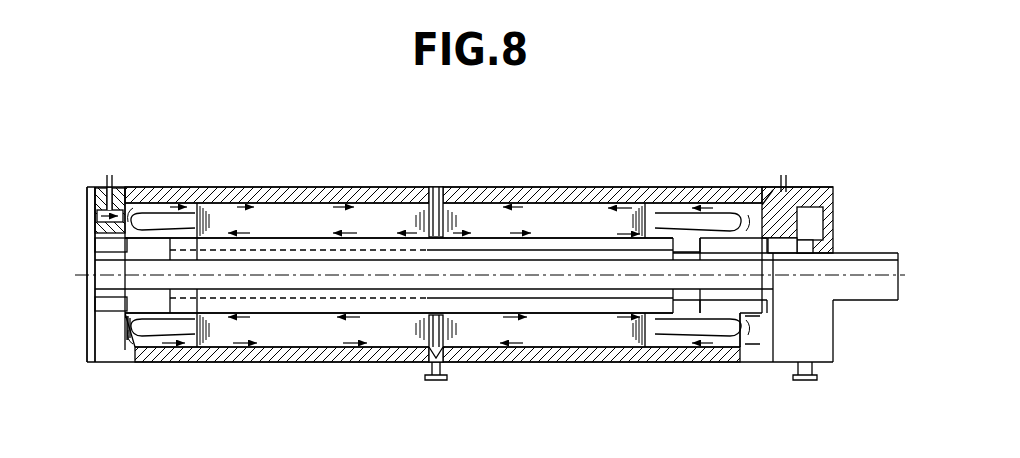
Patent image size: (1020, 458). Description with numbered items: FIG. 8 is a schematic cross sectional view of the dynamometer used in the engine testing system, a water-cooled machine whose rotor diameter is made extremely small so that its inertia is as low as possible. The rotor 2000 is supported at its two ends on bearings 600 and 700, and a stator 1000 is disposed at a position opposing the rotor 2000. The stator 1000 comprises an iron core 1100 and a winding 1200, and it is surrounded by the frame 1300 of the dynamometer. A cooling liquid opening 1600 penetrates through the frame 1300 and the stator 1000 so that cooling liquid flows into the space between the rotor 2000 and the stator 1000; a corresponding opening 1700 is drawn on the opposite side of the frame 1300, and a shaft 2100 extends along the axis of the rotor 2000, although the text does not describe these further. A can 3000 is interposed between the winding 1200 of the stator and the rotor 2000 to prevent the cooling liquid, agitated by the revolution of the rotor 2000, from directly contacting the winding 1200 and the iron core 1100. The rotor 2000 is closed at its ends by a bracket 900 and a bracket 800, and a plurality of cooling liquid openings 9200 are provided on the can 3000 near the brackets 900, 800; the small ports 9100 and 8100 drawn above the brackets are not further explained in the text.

The bearing 600 is at (767, 216).
The bearing 700 is at (105, 243).
The bracket 800 is at (812, 190).
The bracket 900 is at (93, 189).
The stator 1000 is at (489, 205).
The iron core 1100 is at (540, 212).
The winding 1200 is at (685, 323).
The frame 1300 is at (290, 190).
The cooling liquid opening 1600 is at (435, 186).
The coolant outlet port 1700 is at (438, 381).
The rotor 2000 is at (572, 232).
The shaft 2100 is at (572, 278).
The can 3000 is at (128, 313).
The coolant port 8100 is at (783, 167).
The coolant port 9100 is at (110, 167).
The cooling liquid opening 9200 is at (121, 207).